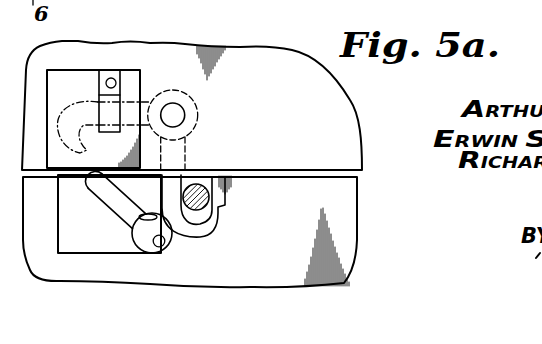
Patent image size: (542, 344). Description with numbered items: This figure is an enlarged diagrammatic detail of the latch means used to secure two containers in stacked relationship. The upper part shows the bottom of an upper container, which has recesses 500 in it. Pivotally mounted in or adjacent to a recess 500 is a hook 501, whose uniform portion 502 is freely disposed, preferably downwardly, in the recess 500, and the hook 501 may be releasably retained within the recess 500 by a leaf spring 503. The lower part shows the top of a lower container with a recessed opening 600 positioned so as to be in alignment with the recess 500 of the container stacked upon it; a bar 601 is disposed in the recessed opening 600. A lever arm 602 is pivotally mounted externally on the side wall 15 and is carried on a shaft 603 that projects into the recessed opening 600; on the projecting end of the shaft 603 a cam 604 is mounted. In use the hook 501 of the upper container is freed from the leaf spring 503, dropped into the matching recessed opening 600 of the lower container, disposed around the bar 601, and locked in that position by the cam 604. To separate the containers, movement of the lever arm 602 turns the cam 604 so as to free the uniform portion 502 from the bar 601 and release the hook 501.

The side walls 15 is at (337, 117).
The recesses 500 is at (68, 80).
The hooks 501 is at (198, 118).
The uniform portions 502 is at (208, 219).
The leaf springs 503 is at (117, 73).
The recessed openings 600 is at (135, 256).
The bars 601 is at (208, 193).
The lever arms 602 is at (100, 194).
The shafts 603 is at (165, 244).
The cams 604 is at (128, 226).